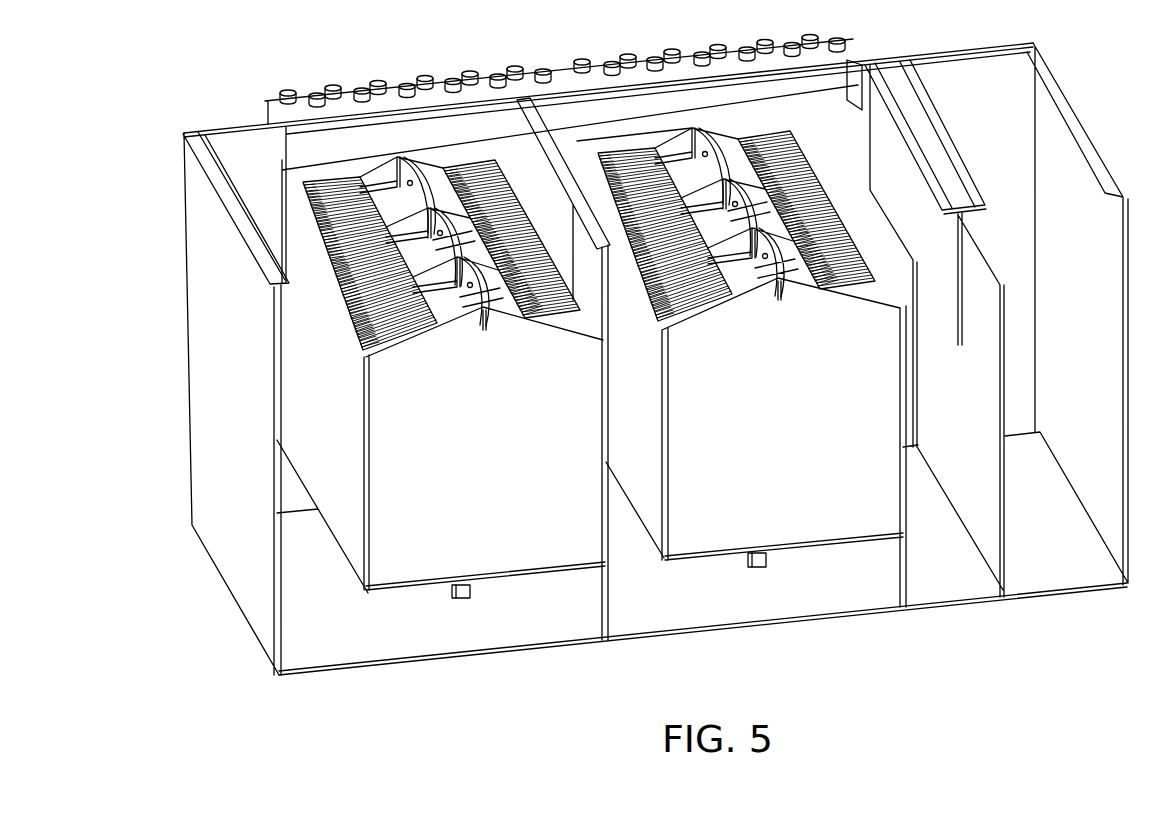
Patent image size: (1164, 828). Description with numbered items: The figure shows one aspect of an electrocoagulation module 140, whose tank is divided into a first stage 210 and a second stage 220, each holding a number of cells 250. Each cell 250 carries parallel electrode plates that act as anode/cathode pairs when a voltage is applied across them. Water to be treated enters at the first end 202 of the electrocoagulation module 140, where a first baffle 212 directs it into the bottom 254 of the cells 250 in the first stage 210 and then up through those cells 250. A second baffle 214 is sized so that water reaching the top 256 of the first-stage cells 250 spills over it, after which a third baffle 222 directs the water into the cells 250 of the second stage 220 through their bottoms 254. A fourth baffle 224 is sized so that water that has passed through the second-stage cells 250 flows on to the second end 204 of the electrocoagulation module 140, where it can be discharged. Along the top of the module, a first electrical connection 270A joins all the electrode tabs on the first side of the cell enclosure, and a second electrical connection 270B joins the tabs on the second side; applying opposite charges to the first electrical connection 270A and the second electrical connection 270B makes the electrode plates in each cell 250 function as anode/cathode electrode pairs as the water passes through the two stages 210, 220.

The electrocoagulation module 140 is at (595, 78).
The first end 202 is at (293, 628).
The second end 204 is at (1087, 555).
The first stage 210 is at (477, 607).
The first baffle 212 is at (342, 550).
The second baffle 214 is at (610, 588).
The second stage 220 is at (795, 527).
The third baffle 222 is at (647, 492).
The fourth baffle 224 is at (905, 522).
The cell 250 is at (392, 178).
The bottom of cell 254 is at (538, 580).
The top of cell 256 is at (427, 182).
The first electrical connection 270A is at (322, 172).
The second electrical connection 270B is at (498, 175).